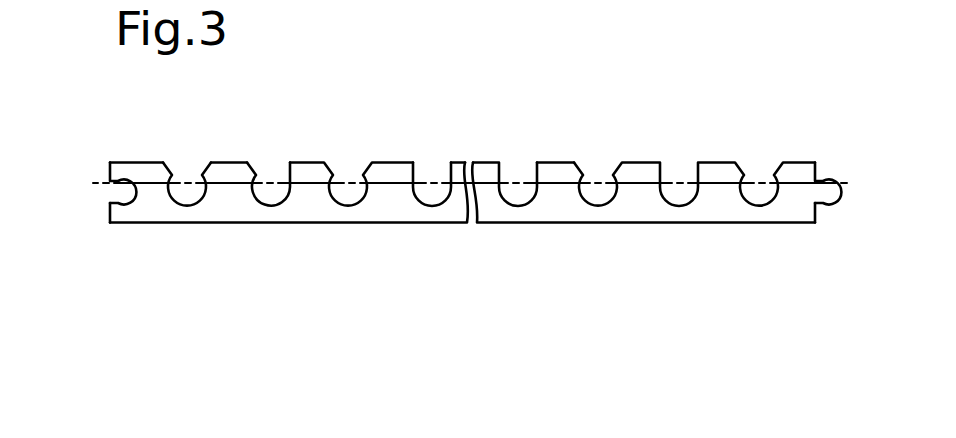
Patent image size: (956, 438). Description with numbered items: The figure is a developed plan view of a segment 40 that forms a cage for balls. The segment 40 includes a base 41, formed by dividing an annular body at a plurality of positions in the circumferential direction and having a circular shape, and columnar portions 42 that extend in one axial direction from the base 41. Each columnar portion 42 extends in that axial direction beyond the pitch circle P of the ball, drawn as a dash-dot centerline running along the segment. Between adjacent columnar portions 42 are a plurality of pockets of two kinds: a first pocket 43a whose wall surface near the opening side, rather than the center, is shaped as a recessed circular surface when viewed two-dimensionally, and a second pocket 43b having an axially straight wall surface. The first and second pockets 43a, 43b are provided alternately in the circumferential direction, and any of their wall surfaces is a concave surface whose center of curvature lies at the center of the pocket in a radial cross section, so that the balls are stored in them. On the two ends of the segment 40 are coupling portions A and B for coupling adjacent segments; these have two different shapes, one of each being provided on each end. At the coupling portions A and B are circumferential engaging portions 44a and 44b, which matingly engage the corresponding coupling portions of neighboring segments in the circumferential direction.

The segment 40 is at (641, 148).
The base 41 is at (520, 213).
The columnar portion 42 is at (563, 172).
The first pocket 43a is at (192, 174).
The second pocket 43b is at (273, 176).
The circumferential engaging portion 44a is at (831, 182).
The circumferential engaging portion 44b is at (120, 188).
The pitch circle P is at (426, 176).
The coupling portion A is at (826, 213).
The coupling portion B is at (97, 209).